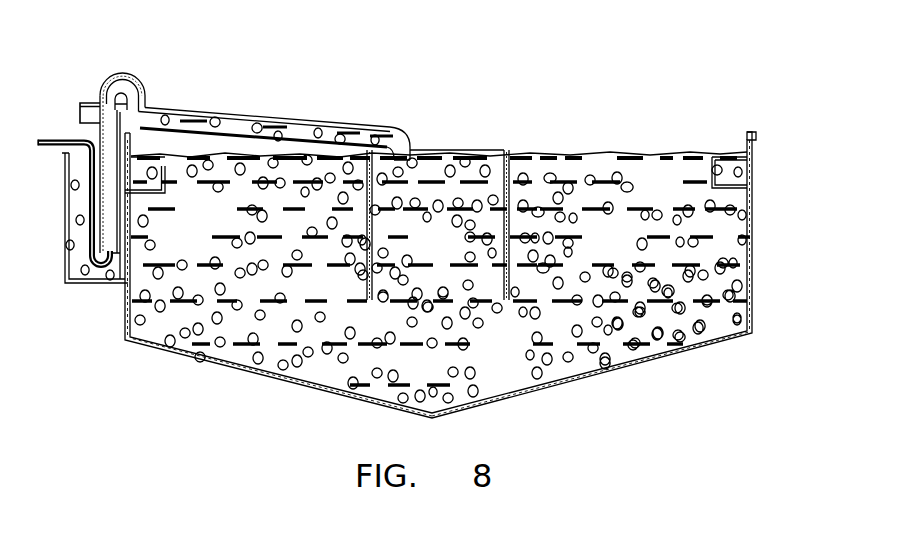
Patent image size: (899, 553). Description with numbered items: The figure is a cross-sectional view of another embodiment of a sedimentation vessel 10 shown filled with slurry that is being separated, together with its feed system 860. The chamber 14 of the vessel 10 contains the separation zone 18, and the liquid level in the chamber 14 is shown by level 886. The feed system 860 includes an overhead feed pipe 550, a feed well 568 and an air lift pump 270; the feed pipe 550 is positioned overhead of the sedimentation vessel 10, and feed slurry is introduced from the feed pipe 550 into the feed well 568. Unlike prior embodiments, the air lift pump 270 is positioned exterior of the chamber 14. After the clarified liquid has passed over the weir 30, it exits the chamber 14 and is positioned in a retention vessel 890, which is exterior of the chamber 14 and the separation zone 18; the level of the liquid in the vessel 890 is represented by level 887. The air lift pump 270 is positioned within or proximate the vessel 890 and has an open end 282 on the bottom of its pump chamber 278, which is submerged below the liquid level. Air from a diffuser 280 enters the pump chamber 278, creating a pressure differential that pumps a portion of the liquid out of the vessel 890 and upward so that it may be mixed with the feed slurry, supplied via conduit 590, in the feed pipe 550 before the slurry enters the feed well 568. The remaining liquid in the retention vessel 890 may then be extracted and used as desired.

The sedimentation vessel 10 is at (765, 310).
The chamber 14 is at (663, 134).
The separation zone 18 is at (624, 248).
The weir 30 is at (166, 176).
The air lift pump 270 is at (127, 62).
The pump chamber 278 is at (112, 227).
The diffuser 280 is at (90, 228).
The open end 282 is at (118, 285).
The feed pipe 550 is at (291, 118).
The feed well 568 is at (455, 248).
The conduit 590 is at (148, 103).
The feed system 860 is at (423, 127).
The liquid level 886 is at (158, 160).
The liquid level 887 is at (130, 190).
The retention vessel 890 is at (78, 277).